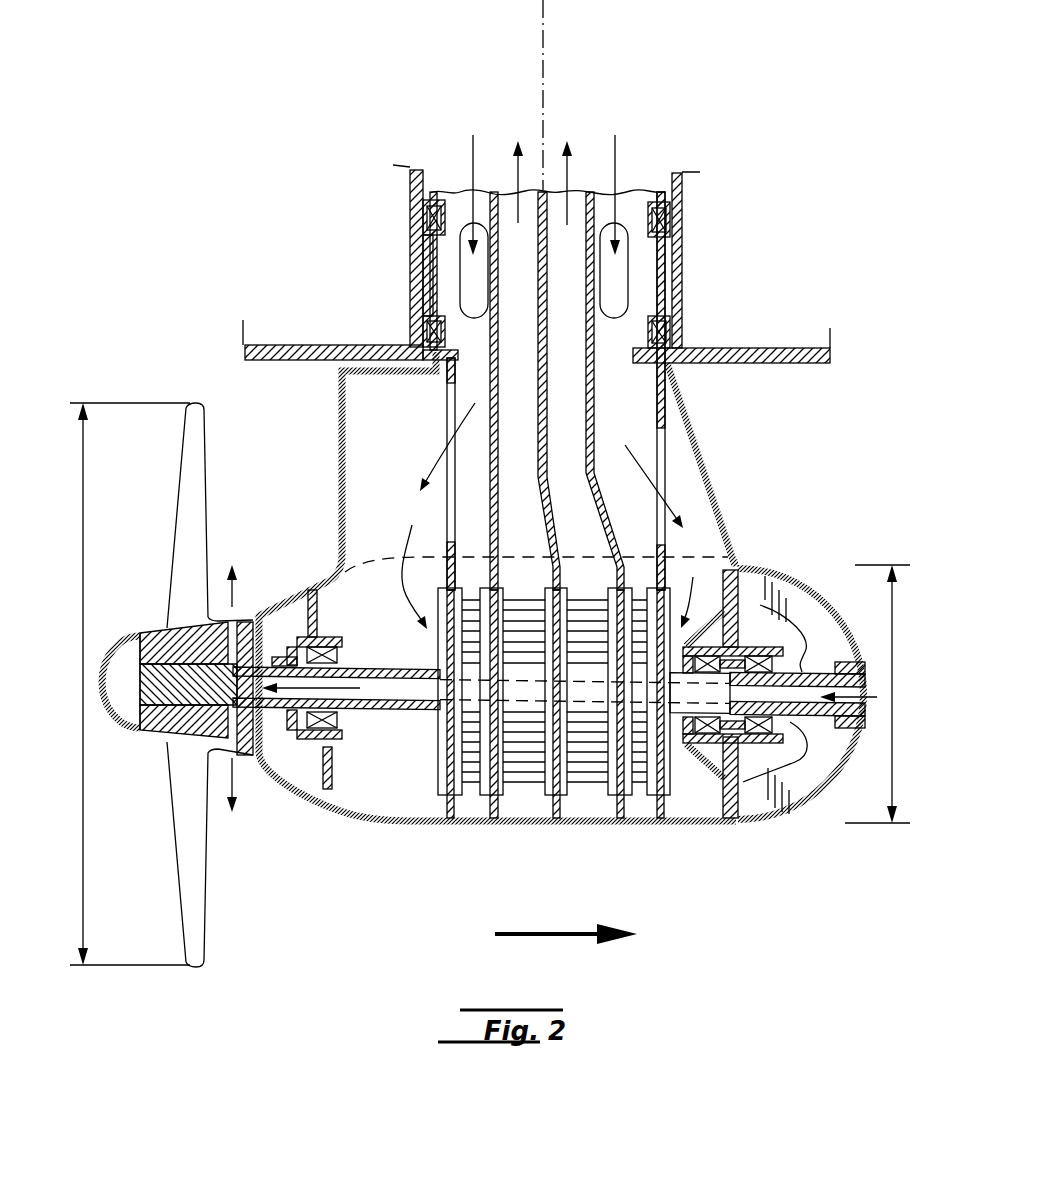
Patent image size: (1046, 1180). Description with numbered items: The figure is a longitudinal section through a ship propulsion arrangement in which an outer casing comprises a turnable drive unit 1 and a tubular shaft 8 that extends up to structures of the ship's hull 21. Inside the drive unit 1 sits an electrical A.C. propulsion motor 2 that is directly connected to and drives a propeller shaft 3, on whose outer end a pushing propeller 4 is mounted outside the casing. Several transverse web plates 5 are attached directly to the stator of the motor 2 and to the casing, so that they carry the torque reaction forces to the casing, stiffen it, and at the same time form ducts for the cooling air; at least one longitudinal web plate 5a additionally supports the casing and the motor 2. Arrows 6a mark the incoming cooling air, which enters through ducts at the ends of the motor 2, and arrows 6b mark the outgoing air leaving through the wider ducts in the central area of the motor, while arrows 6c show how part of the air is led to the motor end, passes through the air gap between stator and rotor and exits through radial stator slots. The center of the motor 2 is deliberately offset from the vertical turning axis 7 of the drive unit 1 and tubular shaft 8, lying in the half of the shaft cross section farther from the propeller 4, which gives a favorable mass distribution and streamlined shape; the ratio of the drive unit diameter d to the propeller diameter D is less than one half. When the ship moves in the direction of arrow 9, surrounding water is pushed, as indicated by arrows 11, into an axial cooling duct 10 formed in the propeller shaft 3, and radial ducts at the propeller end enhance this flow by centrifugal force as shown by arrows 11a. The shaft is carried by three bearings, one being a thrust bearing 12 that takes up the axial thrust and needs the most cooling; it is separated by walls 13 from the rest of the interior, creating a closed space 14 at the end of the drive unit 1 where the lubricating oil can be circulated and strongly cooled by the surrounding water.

The drive unit 1 is at (686, 820).
The propulsion motor 2 is at (587, 773).
The propeller shaft 3 is at (820, 673).
The propeller 4 is at (197, 508).
The web plates 5 is at (447, 383).
The longitudinal web plate 5a is at (458, 215).
The arrows 6a is at (616, 157).
The arrows 6b is at (566, 163).
The arrows 6c is at (400, 588).
The vertical turning axis 7 is at (545, 40).
The tubular shaft 8 is at (680, 275).
The arrow 9 is at (535, 930).
The axial cooling duct 10 is at (853, 753).
The arrows 11 is at (872, 689).
The arrows 11a is at (233, 780).
The thrust bearing 12 is at (758, 770).
The walls 13 is at (710, 775).
The closed space 14 is at (803, 608).
The ship's hull structures 21 is at (795, 363).
The propeller diameter D is at (90, 823).
The drive unit diameter d is at (890, 784).